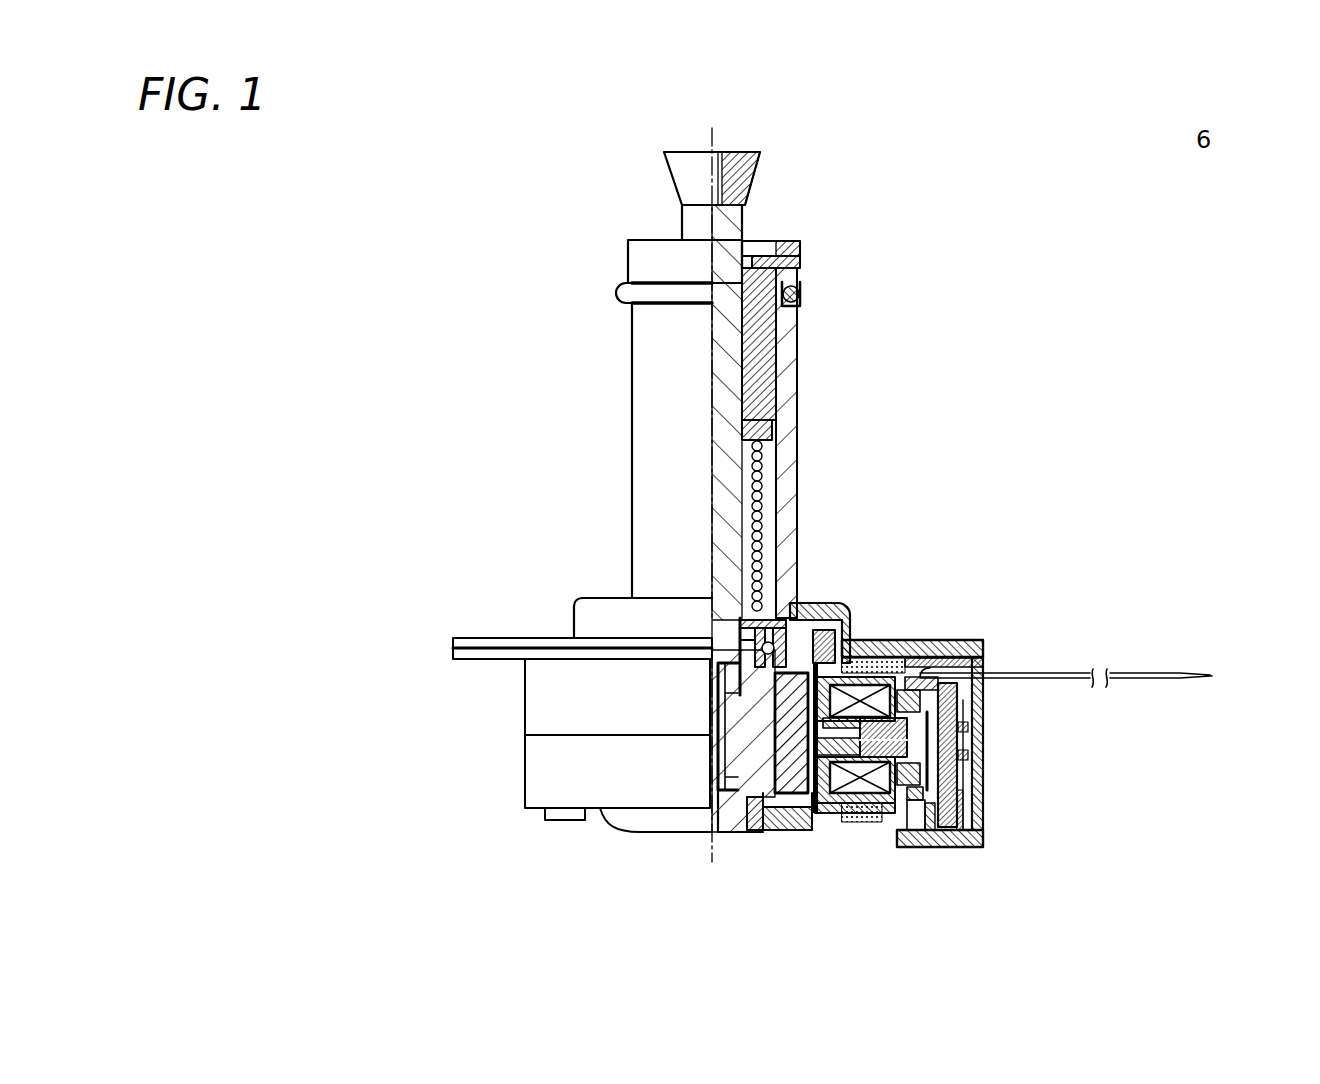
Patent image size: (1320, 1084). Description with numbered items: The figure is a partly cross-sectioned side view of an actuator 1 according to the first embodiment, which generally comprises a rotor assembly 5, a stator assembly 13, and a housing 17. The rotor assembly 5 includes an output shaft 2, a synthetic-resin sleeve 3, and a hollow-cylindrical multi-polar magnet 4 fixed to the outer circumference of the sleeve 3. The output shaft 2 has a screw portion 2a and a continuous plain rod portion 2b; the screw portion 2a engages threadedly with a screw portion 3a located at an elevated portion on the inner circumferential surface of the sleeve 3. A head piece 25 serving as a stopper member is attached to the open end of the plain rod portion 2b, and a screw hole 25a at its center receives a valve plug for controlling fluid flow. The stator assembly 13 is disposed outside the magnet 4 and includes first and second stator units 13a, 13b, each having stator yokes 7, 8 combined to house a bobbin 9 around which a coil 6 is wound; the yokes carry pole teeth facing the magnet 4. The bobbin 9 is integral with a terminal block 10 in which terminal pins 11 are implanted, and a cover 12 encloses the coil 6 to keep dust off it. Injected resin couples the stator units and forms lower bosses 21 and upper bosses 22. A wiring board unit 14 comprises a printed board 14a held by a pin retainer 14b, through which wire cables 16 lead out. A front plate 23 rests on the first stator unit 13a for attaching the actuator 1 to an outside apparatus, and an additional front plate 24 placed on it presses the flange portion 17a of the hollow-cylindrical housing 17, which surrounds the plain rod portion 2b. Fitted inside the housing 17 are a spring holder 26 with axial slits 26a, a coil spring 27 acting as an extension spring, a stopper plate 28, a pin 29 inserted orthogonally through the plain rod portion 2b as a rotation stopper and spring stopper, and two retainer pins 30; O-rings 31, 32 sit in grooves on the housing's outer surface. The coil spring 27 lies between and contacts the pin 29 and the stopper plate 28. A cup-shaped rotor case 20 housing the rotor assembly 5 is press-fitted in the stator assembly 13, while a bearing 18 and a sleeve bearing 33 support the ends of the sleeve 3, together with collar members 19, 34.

The actuator 1 is at (1030, 348).
The output shaft 2 is at (344, 276).
The screw portion 2a is at (716, 692).
The plain rod portion 2b is at (723, 378).
The sleeve 3 is at (770, 772).
The screw portion 3a is at (728, 722).
The magnet 4 is at (778, 795).
The rotor assembly 5 is at (344, 430).
The coil 6 is at (897, 650).
The stator yoke 7 is at (838, 803).
The stator yoke 8 is at (930, 845).
The bobbin 9 is at (903, 662).
The terminal block 10 is at (982, 800).
The terminal pins 11 is at (980, 755).
The cover 12 is at (958, 845).
The stator assembly 13 is at (422, 787).
The first stator unit 13a is at (522, 686).
The second stator unit 13b is at (522, 782).
The wiring board unit 14 is at (1196, 347).
The printed board 14a is at (982, 760).
The pin retainer 14b is at (985, 695).
The wire cables 16 is at (1058, 670).
The housing 17 is at (793, 375).
The flange portion 17a is at (838, 648).
The bearing 18 is at (745, 636).
The collar member 19 is at (796, 813).
The rotor case 20 is at (806, 813).
The lower bosses 21 is at (872, 813).
The upper bosses 22 is at (885, 645).
The front plate 23 is at (983, 670).
The additional front plate 24 is at (983, 655).
The head piece 25 is at (762, 152).
The screw hole 25a is at (716, 150).
The spring holder 26 is at (773, 333).
The slits 26a is at (793, 470).
The coil spring 27 is at (757, 560).
The stopper plate 28 is at (755, 600).
The pin 29 is at (737, 430).
The retainer pins 30 is at (799, 260).
The O-ring 31 is at (866, 668).
The O-ring 32 is at (802, 297).
The sleeve bearing 33 is at (788, 810).
The collar member 34 is at (875, 662).